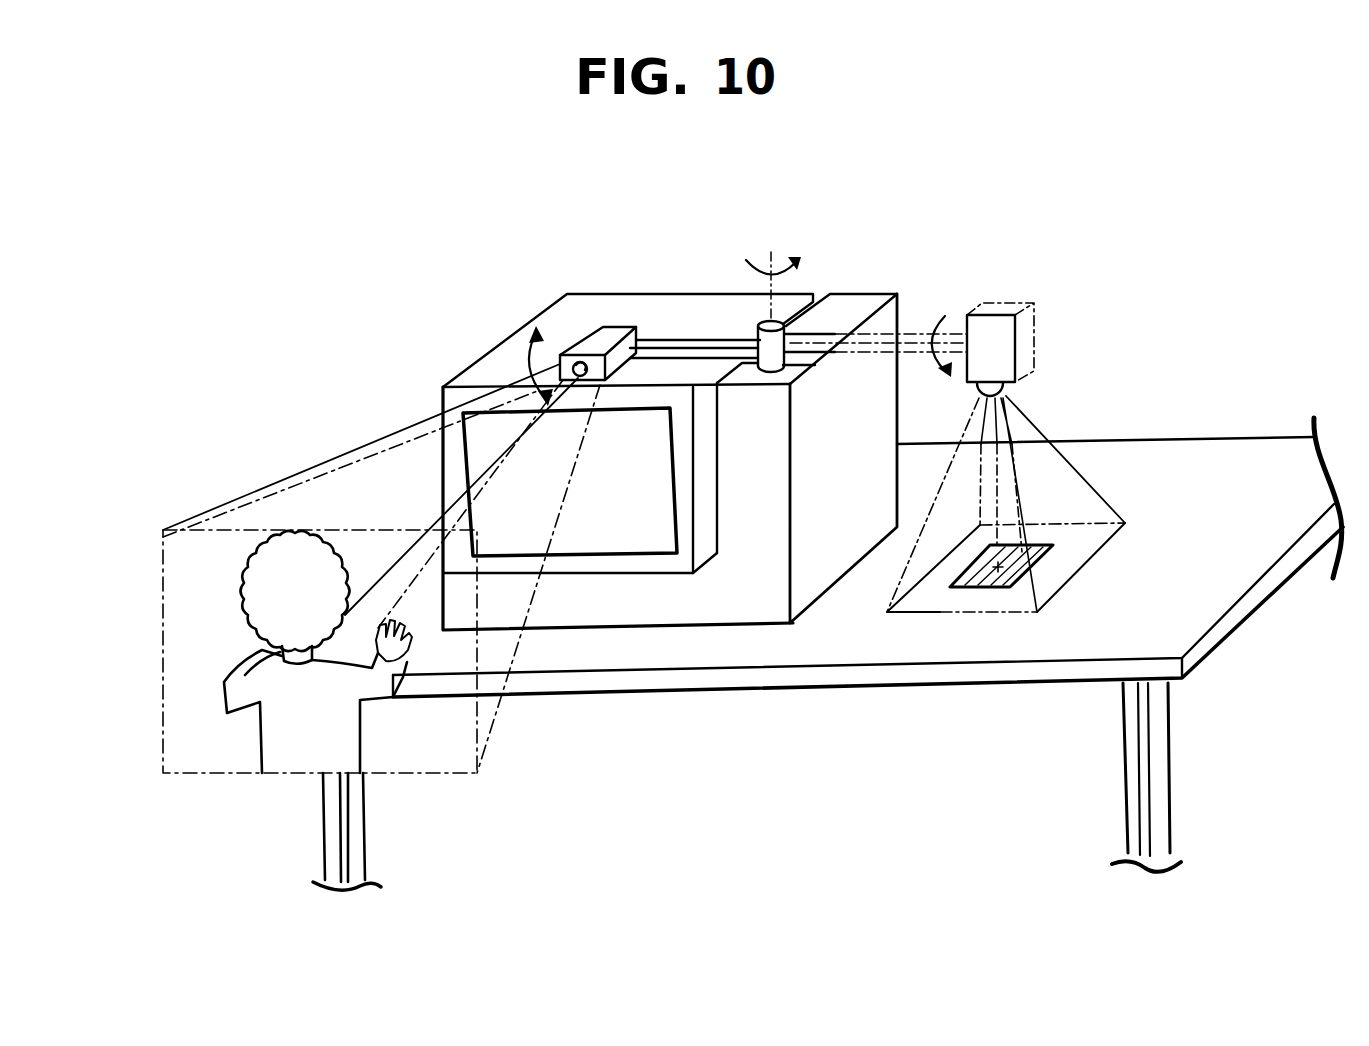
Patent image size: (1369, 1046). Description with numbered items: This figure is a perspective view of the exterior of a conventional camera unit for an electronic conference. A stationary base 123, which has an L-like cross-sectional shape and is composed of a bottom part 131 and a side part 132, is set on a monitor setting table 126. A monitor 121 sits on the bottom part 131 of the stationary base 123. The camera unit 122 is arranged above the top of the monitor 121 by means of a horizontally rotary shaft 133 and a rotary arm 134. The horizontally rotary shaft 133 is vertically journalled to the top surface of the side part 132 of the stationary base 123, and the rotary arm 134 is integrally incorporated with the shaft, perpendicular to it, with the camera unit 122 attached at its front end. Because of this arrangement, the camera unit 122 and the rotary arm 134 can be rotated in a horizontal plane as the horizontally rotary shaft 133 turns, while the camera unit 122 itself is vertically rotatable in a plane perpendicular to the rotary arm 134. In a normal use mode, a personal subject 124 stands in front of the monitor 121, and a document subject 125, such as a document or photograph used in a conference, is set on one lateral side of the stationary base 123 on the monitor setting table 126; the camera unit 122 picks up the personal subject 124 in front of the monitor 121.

The monitor 121 is at (503, 352).
The camera unit 122 is at (600, 330).
The stationary base 123 is at (853, 297).
The personal subject 124 is at (297, 750).
The document subject 125 is at (985, 590).
The monitor setting table 126 is at (833, 648).
The bottom part 131 is at (676, 612).
The side part 132 is at (982, 396).
The horizontally rotary shaft 133 is at (787, 366).
The rotary arm 134 is at (693, 340).